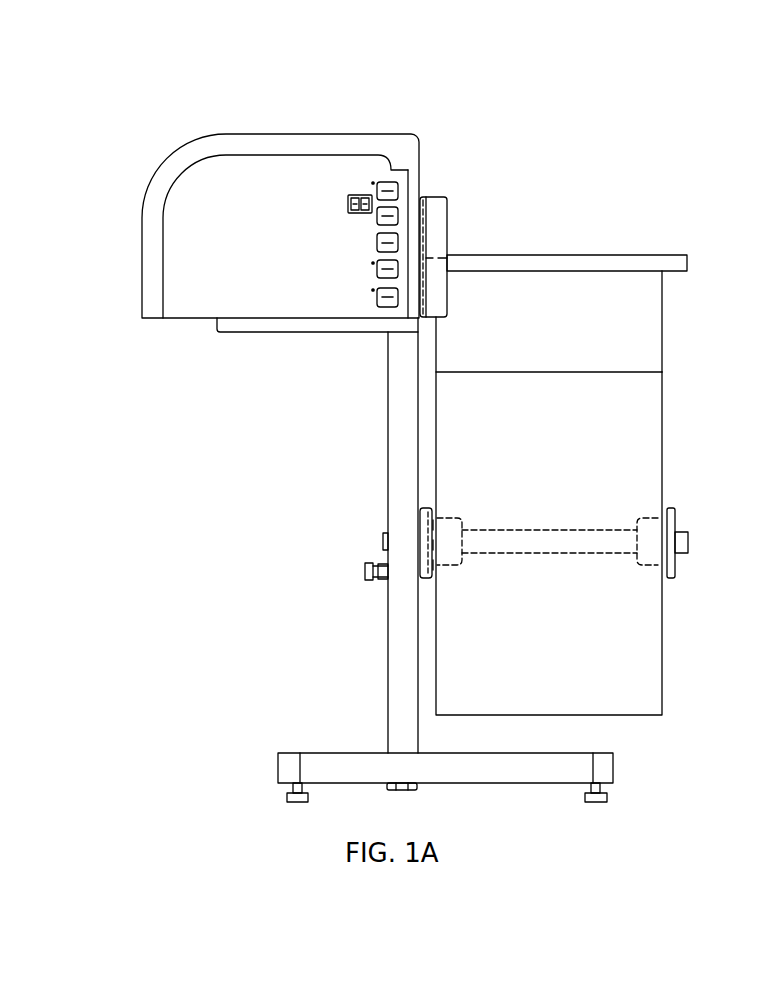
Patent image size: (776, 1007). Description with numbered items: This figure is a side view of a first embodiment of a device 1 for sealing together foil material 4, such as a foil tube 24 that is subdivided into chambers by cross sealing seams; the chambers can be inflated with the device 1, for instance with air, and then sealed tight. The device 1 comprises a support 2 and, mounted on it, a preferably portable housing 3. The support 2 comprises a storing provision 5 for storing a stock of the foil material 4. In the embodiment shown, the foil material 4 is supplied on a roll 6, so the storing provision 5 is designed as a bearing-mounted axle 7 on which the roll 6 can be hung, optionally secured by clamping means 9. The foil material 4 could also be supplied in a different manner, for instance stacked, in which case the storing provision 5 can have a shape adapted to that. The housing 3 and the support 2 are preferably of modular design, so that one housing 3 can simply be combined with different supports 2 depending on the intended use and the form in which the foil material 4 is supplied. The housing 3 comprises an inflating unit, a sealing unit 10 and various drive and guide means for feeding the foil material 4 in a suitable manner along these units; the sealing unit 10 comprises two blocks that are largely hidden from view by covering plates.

The device 1 is at (211, 501).
The support 2 is at (330, 768).
The housing 3 is at (200, 188).
The foil material 4 is at (645, 321).
The foil tube 24 is at (719, 321).
The storing provision 5 is at (678, 667).
The roll 6 is at (645, 429).
The bearing-mounted axle 7 is at (588, 532).
The clamping means 9 is at (652, 542).
The sealing unit 10 is at (451, 215).